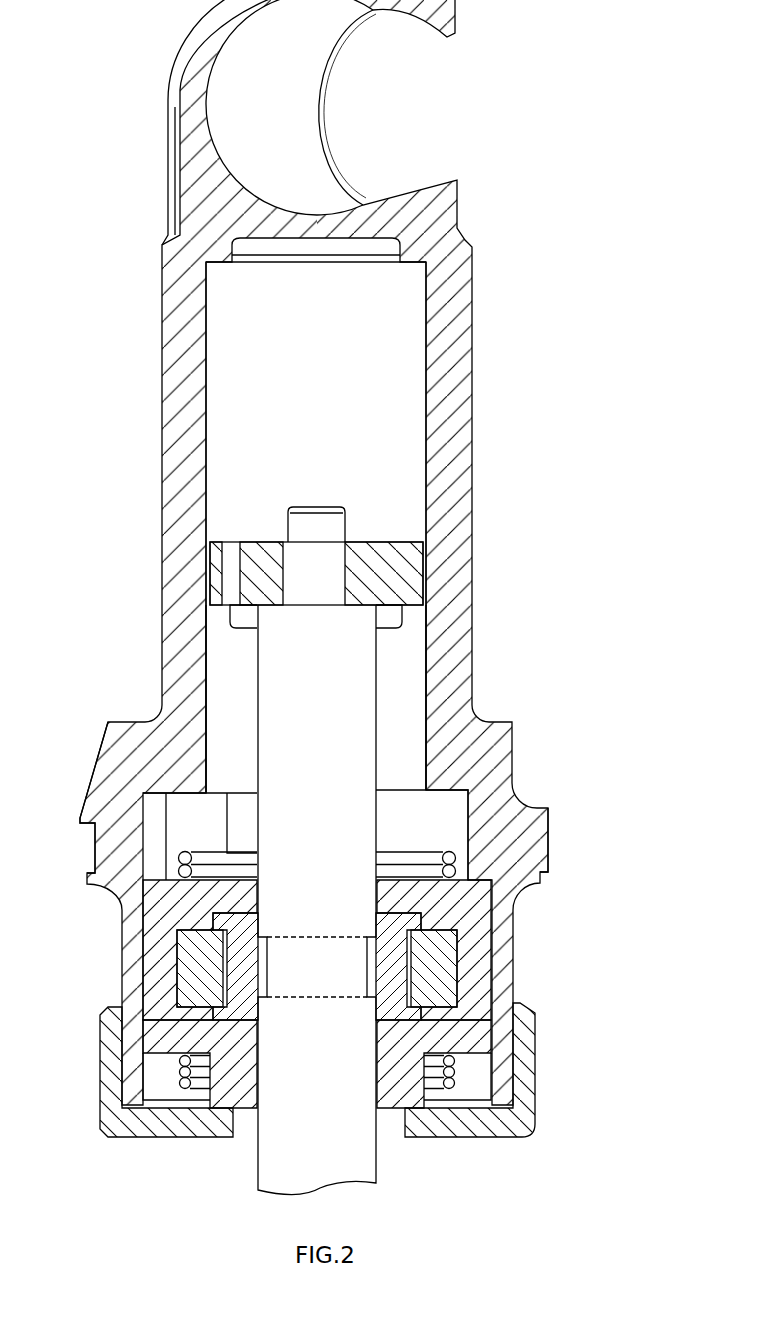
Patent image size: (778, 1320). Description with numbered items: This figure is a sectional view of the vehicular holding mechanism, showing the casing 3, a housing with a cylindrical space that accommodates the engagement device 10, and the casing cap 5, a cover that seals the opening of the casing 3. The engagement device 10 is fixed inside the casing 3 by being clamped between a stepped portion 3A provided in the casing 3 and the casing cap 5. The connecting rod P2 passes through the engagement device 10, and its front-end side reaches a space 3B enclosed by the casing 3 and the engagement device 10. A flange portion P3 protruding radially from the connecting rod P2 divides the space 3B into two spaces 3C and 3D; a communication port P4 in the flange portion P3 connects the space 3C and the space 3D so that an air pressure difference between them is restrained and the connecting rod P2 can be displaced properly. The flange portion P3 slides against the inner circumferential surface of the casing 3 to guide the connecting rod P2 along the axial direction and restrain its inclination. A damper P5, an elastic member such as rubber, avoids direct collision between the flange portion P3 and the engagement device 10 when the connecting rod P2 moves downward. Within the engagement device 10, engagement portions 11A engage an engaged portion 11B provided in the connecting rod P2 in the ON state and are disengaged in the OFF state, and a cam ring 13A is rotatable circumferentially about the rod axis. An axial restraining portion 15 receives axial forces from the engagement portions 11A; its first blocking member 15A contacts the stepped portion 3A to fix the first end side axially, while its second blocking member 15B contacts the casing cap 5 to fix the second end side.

The casing 3 is at (470, 528).
The stepped portion 3A is at (195, 790).
The space 3B is at (400, 460).
The space 3C is at (400, 345).
The space 3D is at (400, 655).
The casing cap 5 is at (540, 1080).
The engagement device 10 is at (405, 790).
The engagement portions 11A is at (237, 952).
The engaged portion 11B is at (297, 980).
The cam ring 13A is at (190, 985).
The axial restraining portion 15 is at (395, 994).
The first blocking member 15A is at (470, 908).
The second blocking member 15B is at (477, 1027).
The connecting rod P2 is at (357, 1162).
The flange portion P3 is at (408, 567).
The communication port P4 is at (228, 580).
The damper P5 is at (223, 620).